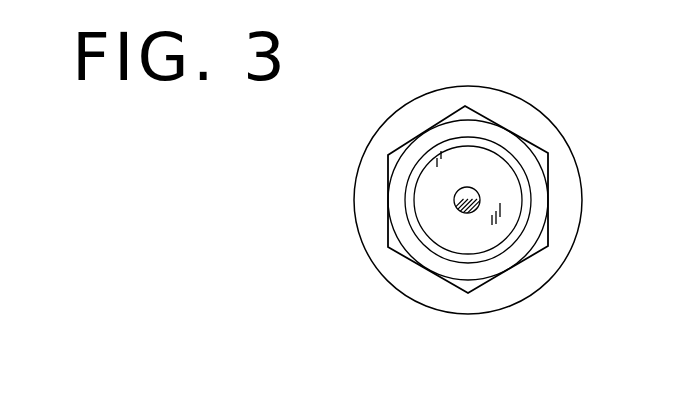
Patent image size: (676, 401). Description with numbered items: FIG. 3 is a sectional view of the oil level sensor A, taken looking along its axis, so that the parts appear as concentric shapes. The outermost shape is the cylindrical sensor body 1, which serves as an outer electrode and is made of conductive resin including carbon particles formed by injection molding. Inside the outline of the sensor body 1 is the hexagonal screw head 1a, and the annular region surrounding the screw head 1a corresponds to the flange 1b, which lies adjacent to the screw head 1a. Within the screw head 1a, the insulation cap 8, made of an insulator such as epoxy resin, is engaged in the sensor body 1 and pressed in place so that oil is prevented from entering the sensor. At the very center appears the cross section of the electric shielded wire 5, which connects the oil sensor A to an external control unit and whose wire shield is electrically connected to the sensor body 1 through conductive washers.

The sensor body 1 is at (511, 198).
The screw head 1a is at (548, 173).
The flange 1b is at (518, 287).
The electric shielded wire 5 is at (453, 206).
The insulation cap 8 is at (418, 192).
The oil sensor A is at (590, 112).